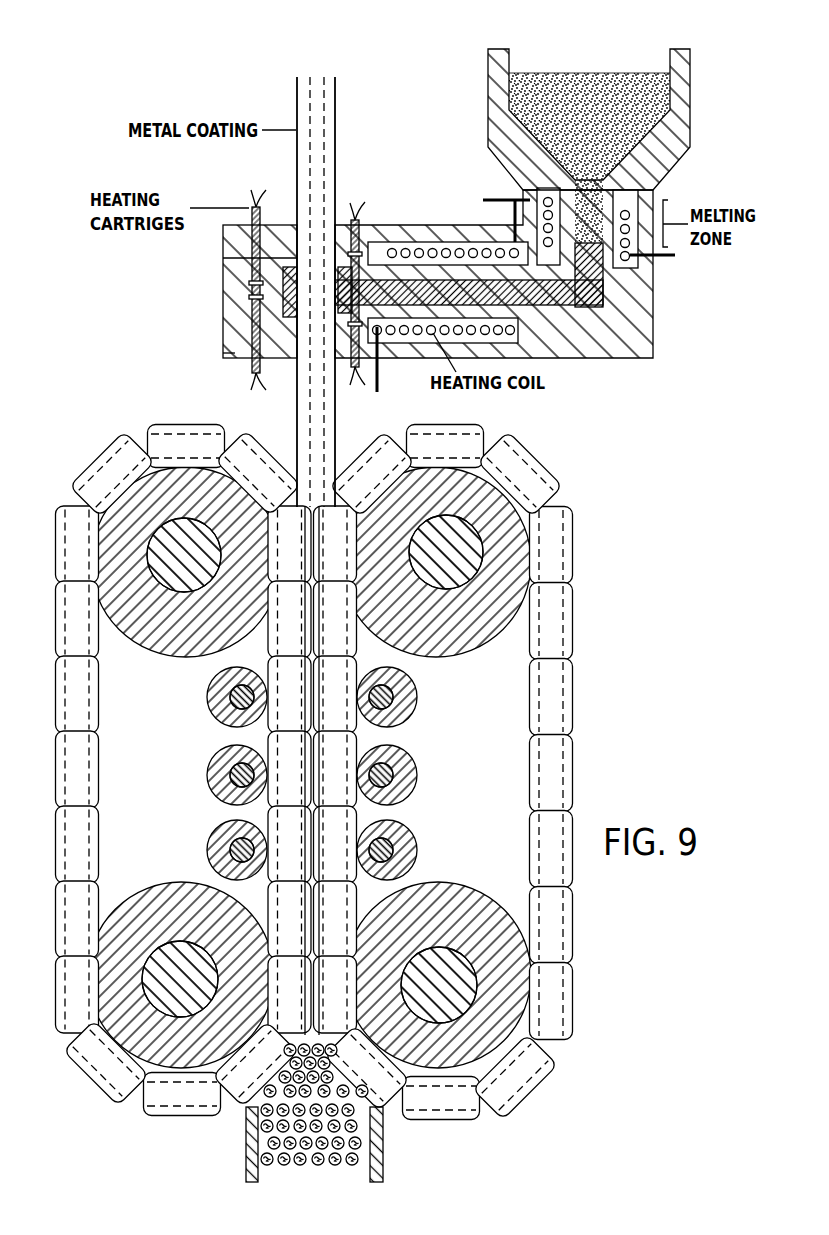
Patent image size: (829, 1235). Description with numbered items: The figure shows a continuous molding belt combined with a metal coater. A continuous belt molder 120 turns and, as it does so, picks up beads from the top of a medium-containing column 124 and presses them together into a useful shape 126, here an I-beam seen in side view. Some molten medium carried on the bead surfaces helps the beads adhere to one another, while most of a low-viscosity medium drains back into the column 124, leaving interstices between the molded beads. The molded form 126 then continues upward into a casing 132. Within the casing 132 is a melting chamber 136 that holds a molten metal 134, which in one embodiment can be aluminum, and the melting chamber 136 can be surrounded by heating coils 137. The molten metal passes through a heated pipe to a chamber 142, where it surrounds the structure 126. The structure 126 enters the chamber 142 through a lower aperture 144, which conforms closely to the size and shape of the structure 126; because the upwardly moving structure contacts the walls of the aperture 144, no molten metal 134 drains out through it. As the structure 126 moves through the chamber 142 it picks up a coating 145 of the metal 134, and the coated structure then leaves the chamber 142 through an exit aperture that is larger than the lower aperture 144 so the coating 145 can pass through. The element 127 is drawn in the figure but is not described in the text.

The continuous belt molder 120 is at (558, 603).
The medium-containing column 124 is at (382, 1178).
The useful shape 126 is at (318, 422).
The wire bundle 127 is at (355, 1125).
The casing 132 is at (240, 315).
The molten metal 134 is at (585, 93).
The melting chamber 136 is at (680, 130).
The heating coils 137 is at (652, 268).
The chamber 142 is at (283, 286).
The lower aperture 144 is at (223, 353).
The coating 145 is at (223, 258).